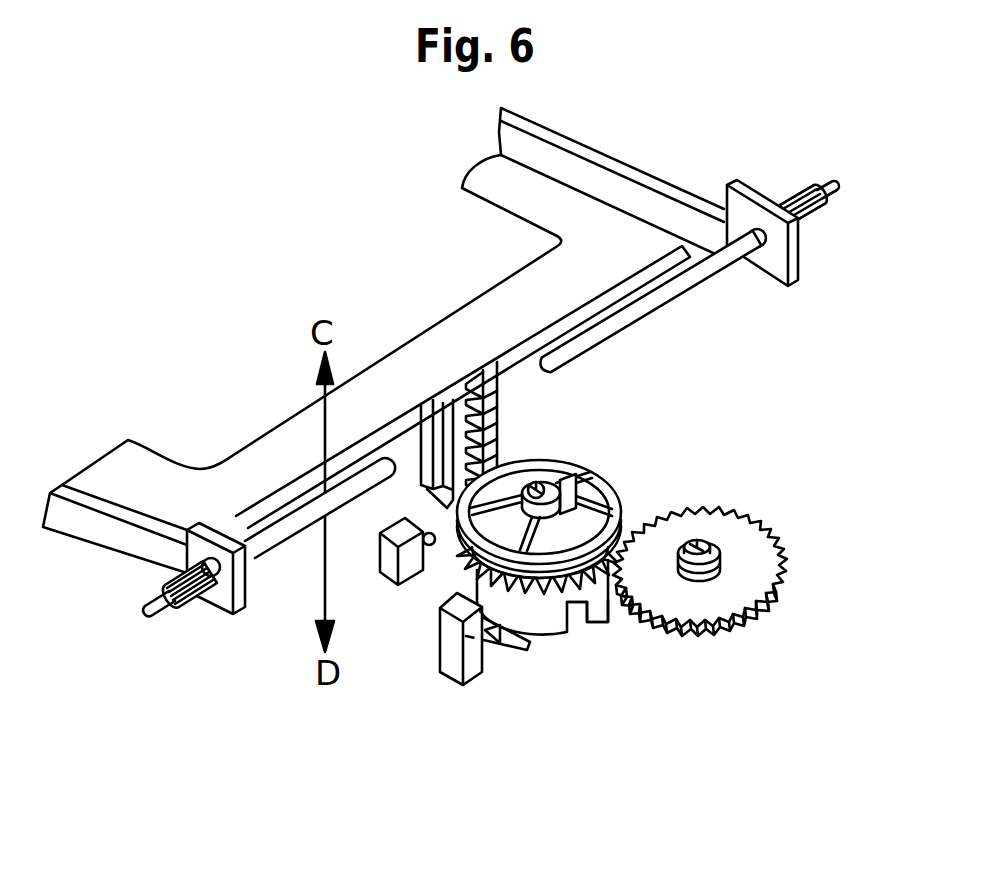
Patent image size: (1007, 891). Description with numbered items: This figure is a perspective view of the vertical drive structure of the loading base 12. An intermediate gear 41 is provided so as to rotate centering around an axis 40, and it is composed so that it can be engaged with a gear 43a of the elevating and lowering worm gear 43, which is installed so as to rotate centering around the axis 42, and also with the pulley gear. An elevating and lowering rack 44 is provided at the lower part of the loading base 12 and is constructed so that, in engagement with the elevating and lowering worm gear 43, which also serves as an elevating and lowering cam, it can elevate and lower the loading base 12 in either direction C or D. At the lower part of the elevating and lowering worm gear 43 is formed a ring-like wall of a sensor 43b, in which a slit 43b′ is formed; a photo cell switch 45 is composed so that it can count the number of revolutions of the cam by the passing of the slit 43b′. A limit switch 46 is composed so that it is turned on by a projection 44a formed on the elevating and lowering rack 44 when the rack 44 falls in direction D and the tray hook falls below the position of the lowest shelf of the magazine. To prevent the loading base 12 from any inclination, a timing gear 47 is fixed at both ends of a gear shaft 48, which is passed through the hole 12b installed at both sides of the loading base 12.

The loading base 12 is at (458, 343).
The hole 12b is at (766, 242).
The axis 40 is at (720, 543).
The intermediate gear 41 is at (720, 507).
The axis 42 is at (553, 487).
The elevating and lowering worm gear 43 is at (608, 481).
The gear 43a is at (542, 597).
The wall of a sensor 43b is at (607, 630).
The slit 43b′ is at (577, 623).
The elevating and lowering rack 44 is at (498, 413).
The projection 44a is at (428, 461).
The photo cell switch 45 is at (477, 645).
The limit switch 46 is at (407, 572).
The timing gear 47 is at (826, 207).
The gear shaft 48 is at (690, 277).